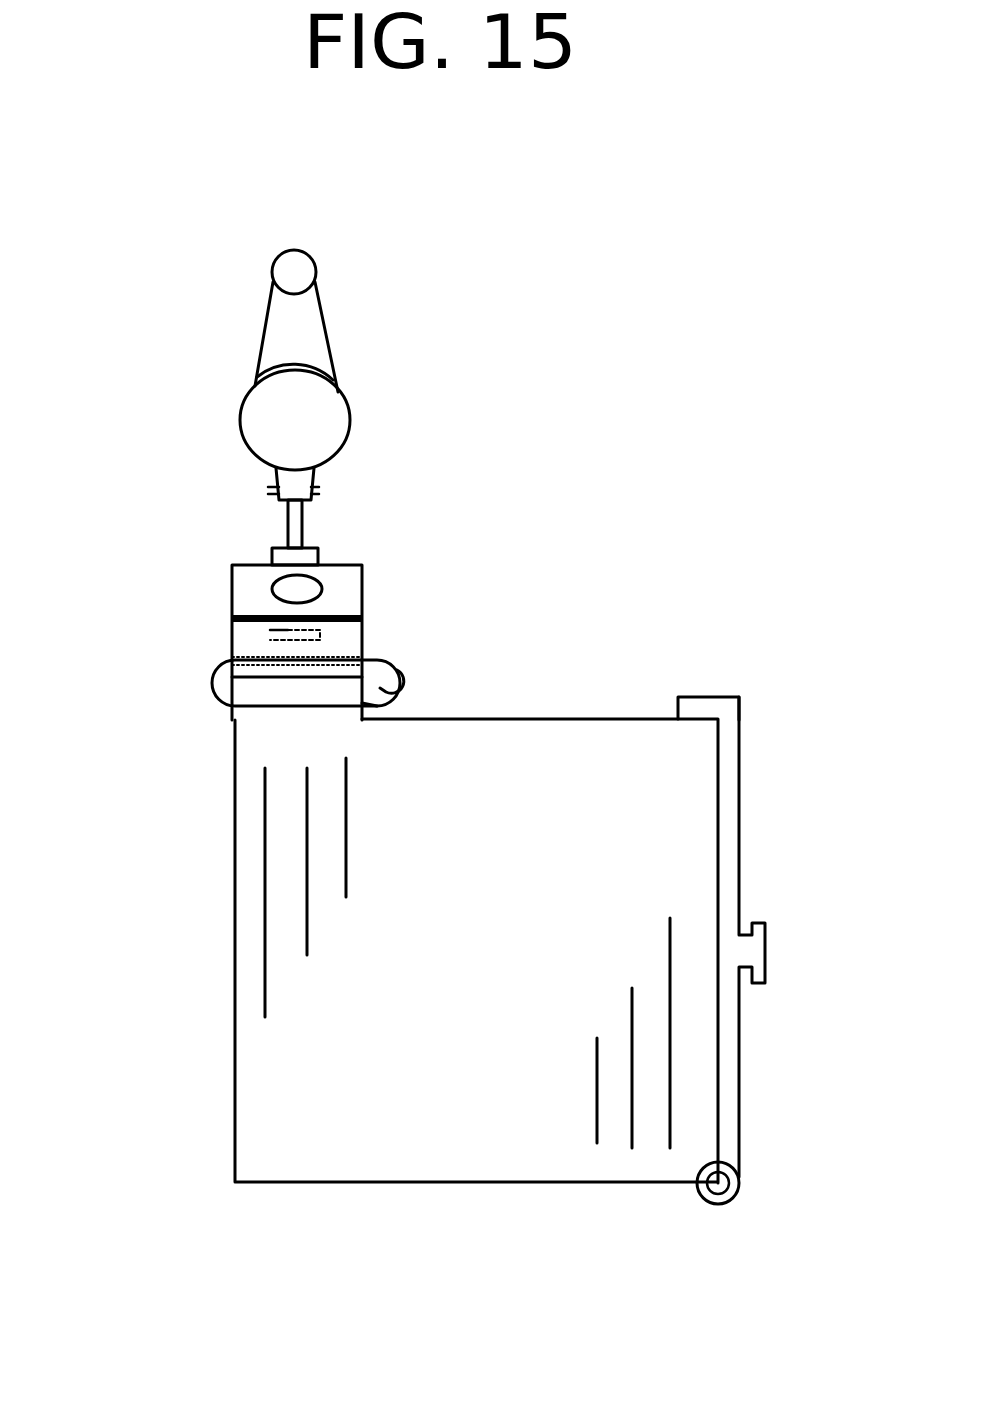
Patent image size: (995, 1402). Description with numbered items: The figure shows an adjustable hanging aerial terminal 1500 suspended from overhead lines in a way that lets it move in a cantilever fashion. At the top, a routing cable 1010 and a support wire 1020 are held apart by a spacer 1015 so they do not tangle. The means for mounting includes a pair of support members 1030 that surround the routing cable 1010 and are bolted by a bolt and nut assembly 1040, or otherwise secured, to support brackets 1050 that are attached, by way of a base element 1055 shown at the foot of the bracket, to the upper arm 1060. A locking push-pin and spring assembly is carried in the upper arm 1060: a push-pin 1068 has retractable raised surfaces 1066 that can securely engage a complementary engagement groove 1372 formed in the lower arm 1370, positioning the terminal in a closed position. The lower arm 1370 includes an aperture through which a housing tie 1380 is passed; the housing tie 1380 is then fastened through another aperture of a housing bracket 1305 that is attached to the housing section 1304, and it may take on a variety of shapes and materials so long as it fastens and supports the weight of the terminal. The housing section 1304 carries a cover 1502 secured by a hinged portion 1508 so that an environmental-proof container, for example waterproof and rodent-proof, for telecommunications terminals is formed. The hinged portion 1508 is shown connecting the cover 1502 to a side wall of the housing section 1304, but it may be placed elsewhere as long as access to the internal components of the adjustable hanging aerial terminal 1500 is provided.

The adjustable hanging aerial terminal 1500 is at (308, 1200).
The support wire 1020 is at (298, 268).
The spacer 1015 is at (287, 333).
The support members 1030 is at (260, 383).
The routing cable 1010 is at (288, 421).
The bolt and nut assembly 1040 is at (313, 485).
The support brackets 1050 is at (305, 518).
The base plate 1055 is at (272, 558).
The upper arm 1060 is at (232, 572).
The push-pin 1068 is at (300, 587).
The retractable raised surfaces 1066 is at (232, 628).
The engagement groove 1372 is at (268, 640).
The lower arm 1370 is at (363, 637).
The housing tie 1380 is at (373, 703).
The housing bracket 1305 is at (258, 718).
The housing section 1304 is at (593, 715).
The cover 1502 is at (740, 792).
The hinged portion 1508 is at (740, 1187).